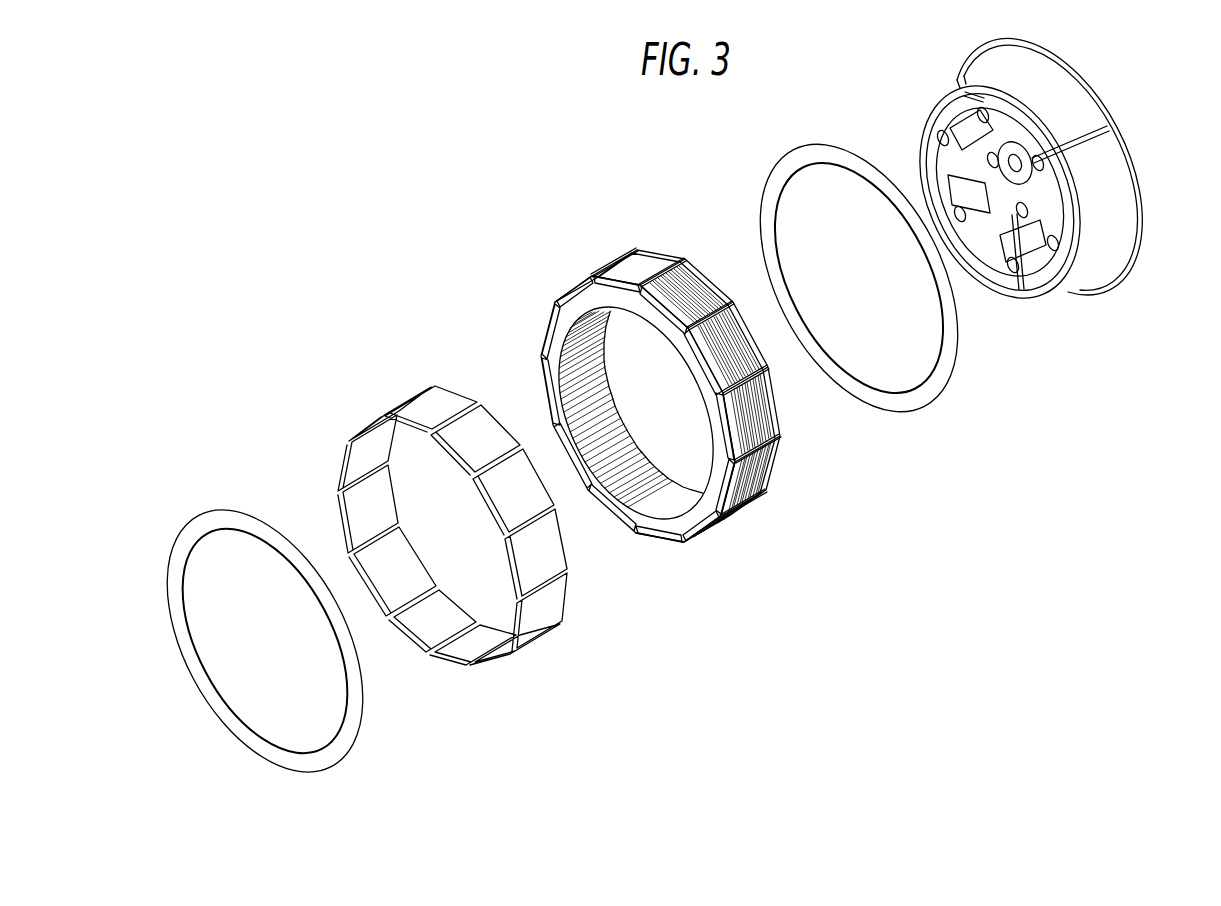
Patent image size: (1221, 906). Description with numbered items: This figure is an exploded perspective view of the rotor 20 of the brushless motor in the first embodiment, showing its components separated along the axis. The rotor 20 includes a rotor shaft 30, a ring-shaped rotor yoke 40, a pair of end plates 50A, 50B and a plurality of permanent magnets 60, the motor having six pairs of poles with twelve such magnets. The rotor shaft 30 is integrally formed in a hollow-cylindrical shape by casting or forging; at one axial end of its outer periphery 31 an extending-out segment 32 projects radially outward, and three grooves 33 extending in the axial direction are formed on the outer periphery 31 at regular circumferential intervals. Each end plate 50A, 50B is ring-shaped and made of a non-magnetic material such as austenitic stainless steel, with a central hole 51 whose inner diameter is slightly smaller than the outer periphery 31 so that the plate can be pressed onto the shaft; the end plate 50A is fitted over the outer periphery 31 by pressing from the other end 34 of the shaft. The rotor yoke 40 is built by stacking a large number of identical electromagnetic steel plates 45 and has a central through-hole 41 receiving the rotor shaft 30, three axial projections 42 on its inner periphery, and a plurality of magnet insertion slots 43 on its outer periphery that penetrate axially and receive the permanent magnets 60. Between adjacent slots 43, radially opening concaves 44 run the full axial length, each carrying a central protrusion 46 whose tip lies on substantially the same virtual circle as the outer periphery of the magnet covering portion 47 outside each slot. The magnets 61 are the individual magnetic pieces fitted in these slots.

The rotor 20 is at (554, 226).
The rotor shaft 30 is at (1024, 209).
The outer periphery 31 is at (1089, 260).
The extending-out segment 32 is at (1126, 252).
The groove 33 is at (920, 120).
The other end 34 is at (991, 284).
The rotor yoke 40 is at (685, 399).
The through-hole 41 is at (668, 450).
The projection 42 is at (605, 317).
The magnet insertion slot 43 is at (702, 541).
The concave 44 is at (736, 318).
The electromagnetic steel plate 45 is at (667, 542).
The protrusion 46 is at (731, 315).
The magnet covering portion 47 is at (646, 254).
The end plate 50A is at (943, 396).
The end plate 50B is at (366, 736).
The hole 51 is at (273, 551).
The permanent magnet 60 is at (452, 528).
The permanent magnet 61 is at (458, 670).